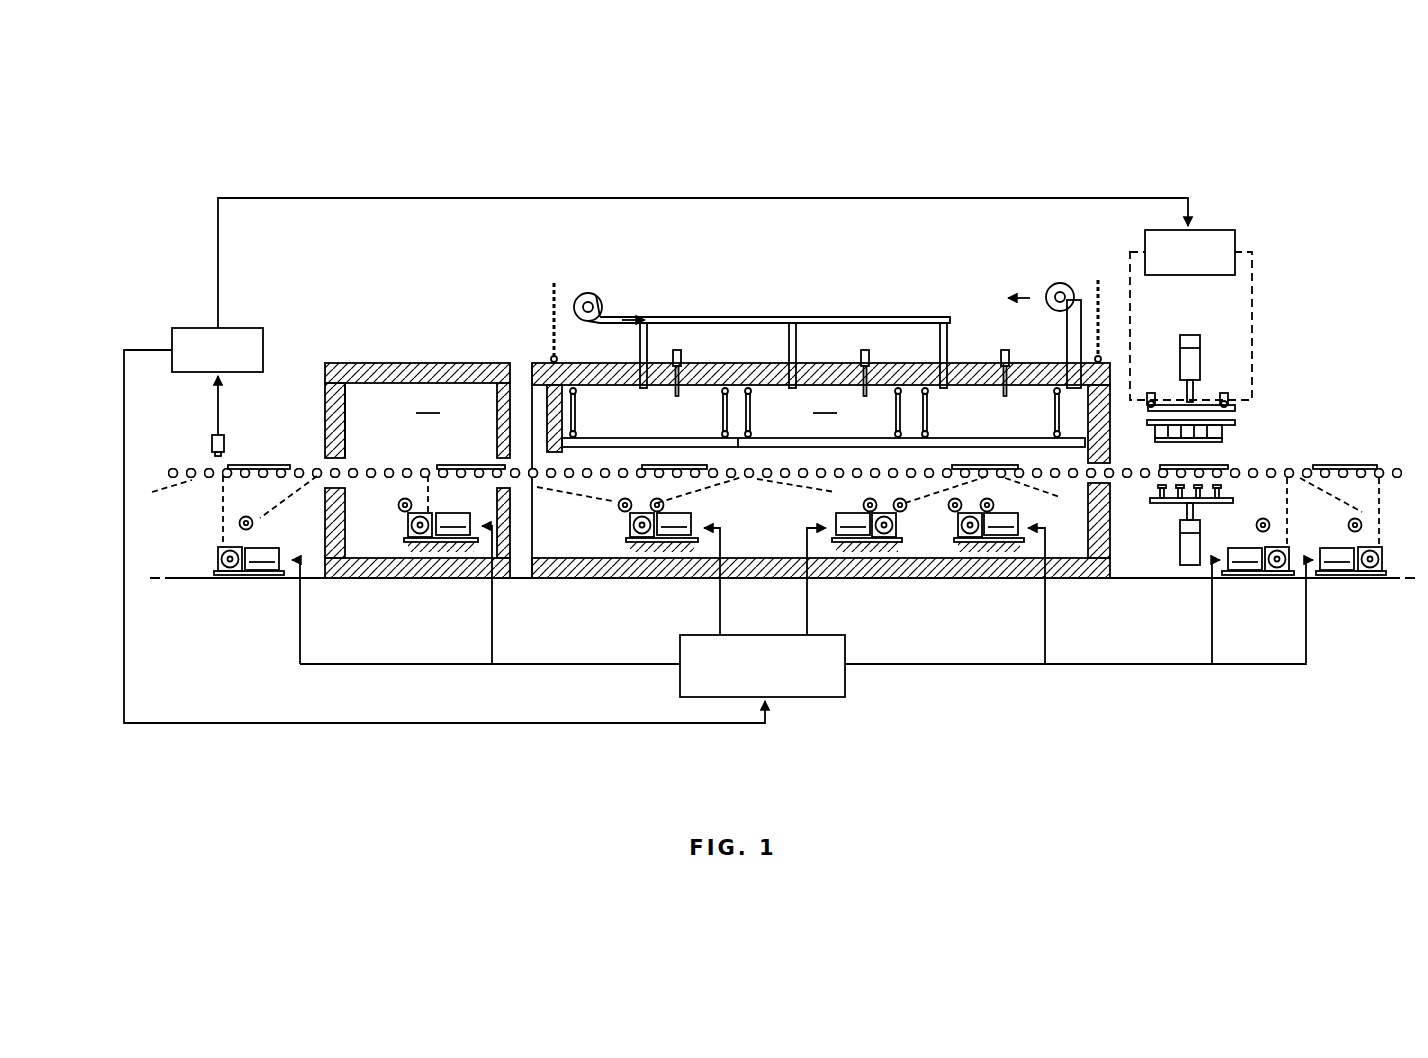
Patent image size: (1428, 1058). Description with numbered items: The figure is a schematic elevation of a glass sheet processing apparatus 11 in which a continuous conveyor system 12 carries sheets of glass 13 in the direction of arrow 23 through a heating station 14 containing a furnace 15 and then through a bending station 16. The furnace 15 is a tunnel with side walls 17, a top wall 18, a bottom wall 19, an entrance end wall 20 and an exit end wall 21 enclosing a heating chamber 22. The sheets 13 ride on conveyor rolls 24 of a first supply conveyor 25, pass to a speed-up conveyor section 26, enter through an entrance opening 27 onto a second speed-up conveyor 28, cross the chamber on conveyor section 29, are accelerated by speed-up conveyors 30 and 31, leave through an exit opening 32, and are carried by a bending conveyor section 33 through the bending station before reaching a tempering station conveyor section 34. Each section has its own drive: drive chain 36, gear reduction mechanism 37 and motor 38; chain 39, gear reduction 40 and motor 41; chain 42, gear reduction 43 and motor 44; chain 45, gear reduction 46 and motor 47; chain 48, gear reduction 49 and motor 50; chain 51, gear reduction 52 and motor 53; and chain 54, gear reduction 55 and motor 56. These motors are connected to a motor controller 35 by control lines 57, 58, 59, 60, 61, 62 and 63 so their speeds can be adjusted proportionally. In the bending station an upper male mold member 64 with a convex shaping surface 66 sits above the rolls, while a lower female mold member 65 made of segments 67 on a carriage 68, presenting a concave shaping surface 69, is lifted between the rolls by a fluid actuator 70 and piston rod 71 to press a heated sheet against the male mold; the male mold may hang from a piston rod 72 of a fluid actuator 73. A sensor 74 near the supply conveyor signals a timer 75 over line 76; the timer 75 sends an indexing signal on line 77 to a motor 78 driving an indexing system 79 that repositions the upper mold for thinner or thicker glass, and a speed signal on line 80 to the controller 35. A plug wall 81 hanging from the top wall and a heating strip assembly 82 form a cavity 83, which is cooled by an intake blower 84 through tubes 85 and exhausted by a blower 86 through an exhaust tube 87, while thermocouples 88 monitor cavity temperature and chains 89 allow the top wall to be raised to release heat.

The glass sheet processing apparatus 11 is at (712, 178).
The continuous conveyor system 12 is at (210, 499).
The sheets of glass 13 is at (240, 464).
The heating station 14 is at (378, 312).
The furnace 15 is at (452, 360).
The bending station 16 is at (1279, 352).
The side walls 17 is at (352, 406).
The top wall 18 is at (366, 363).
The bottom wall 19 is at (388, 580).
The entrance end wall 20 is at (322, 508).
The exit end wall 21 is at (1030, 482).
The heating chamber 22 is at (428, 402).
The arrow 23 is at (176, 454).
The conveyor rolls 24 is at (195, 458).
The first supply conveyor 25 is at (176, 492).
The speed-up conveyor section 26 is at (276, 503).
The entrance opening 27 is at (325, 458).
The second speed-up conveyor 28 is at (392, 462).
The conveyor section 29 is at (574, 498).
The speed-up conveyor 30 is at (787, 494).
The speed-up conveyor 31 is at (1043, 528).
The exit opening 32 is at (1096, 470).
The bending conveyor section 33 is at (1266, 462).
The tempering station conveyor section 34 is at (1380, 512).
The motor controller 35 is at (818, 698).
The endless drive chain 36 is at (222, 541).
The gear reduction mechanism 37 is at (222, 574).
The electric motor 38 is at (260, 574).
The endless drive chain 39 is at (397, 503).
The gear reduction mechanism 40 is at (404, 540).
The motor 41 is at (452, 520).
The drive chain 42 is at (615, 505).
The gear reduction mechanism 43 is at (630, 535).
The motor 44 is at (695, 521).
The chain 45 is at (822, 493).
The gear reduction mechanism 46 is at (890, 534).
The motor 47 is at (866, 541).
The drive chain 48 is at (906, 510).
The gear reduction mechanism 49 is at (965, 543).
The motor 50 is at (1003, 543).
The chain 51 is at (1205, 512).
The gear reduction mechanism 52 is at (1278, 576).
The motor 53 is at (1248, 576).
The chain 54 is at (1340, 497).
The gear reduction mechanism 55 is at (1375, 576).
The motor 56 is at (1338, 576).
The control line 57 is at (300, 650).
The control line 58 is at (492, 632).
The control line 59 is at (720, 603).
The control line 60 is at (807, 601).
The control line 61 is at (1045, 640).
The control line 62 is at (1212, 633).
The control line 63 is at (1306, 642).
The upper male mold member 64 is at (1242, 423).
The lower female mold member 65 is at (1162, 505).
The convex shaping surface 66 is at (1158, 445).
The segments 67 is at (1175, 505).
The carriage 68 is at (1160, 487).
The concave shaping surface 69 is at (1222, 488).
The fluid actuator 70 is at (1180, 550).
The piston rod 71 is at (1198, 510).
The piston rod 72 is at (1186, 398).
The fluid actuator 73 is at (1196, 352).
The sensor 74 is at (224, 436).
The timer 75 is at (205, 326).
The line 76 is at (217, 408).
The line 77 is at (525, 198).
The motor 78 is at (1200, 225).
The indexing system 79 is at (1152, 392).
The line 80 is at (320, 725).
The plug wall 81 is at (548, 414).
The heating strip assembly 82 is at (810, 437).
The cavity 83 is at (825, 402).
The intake blower 84 is at (598, 296).
The tubes 85 is at (640, 346).
The exhaust blower 86 is at (1067, 290).
The exhaust tube 87 is at (1067, 342).
The thermocouples 88 is at (676, 394).
The chains 89 is at (553, 312).